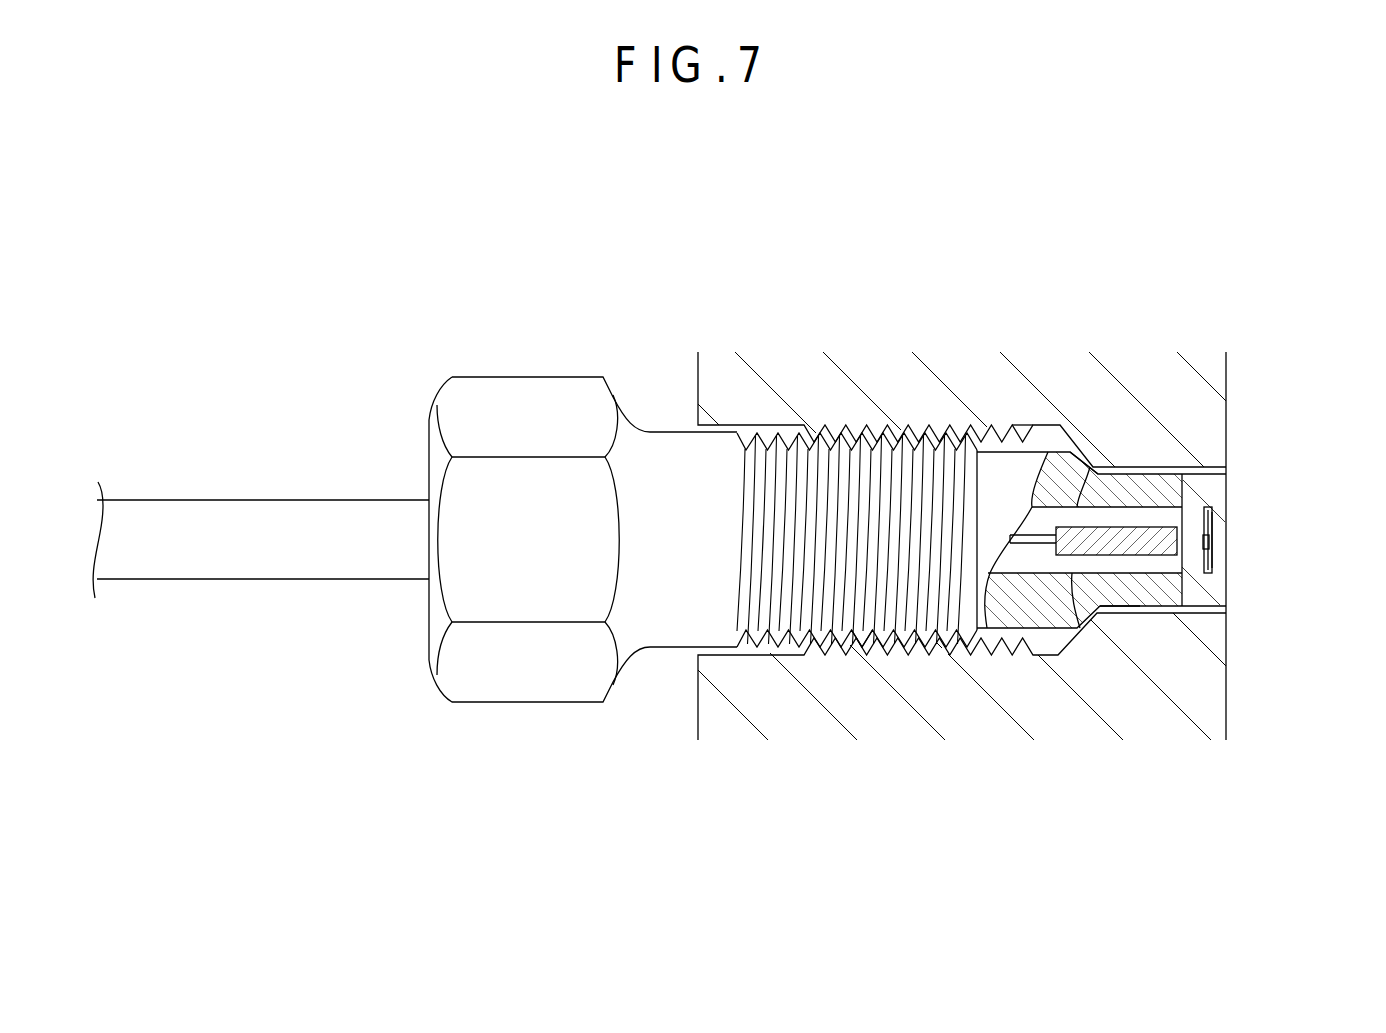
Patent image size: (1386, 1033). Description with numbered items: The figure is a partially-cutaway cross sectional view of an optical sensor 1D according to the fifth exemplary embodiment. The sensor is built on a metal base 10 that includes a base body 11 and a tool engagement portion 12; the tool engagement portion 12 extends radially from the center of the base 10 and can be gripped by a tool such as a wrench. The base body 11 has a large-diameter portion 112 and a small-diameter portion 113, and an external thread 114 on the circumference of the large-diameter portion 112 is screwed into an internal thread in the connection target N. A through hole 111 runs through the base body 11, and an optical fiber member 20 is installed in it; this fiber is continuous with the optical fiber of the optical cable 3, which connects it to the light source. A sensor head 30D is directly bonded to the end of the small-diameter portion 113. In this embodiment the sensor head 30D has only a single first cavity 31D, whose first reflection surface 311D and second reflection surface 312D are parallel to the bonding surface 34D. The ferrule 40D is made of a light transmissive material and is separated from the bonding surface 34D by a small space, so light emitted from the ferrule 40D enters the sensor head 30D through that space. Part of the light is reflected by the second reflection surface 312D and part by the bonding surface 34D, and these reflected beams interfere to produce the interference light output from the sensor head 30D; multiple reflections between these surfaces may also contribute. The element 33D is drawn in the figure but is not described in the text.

The optical sensor 1D is at (1103, 170).
The optical cable 3 is at (273, 500).
The tool engagement portion 12 is at (556, 377).
The base 10 is at (914, 427).
The base body 11 is at (824, 426).
The large-diameter portion 112 is at (1015, 427).
The through hole 111 is at (1092, 466).
The small-diameter portion 113 is at (1122, 607).
The external thread 114 is at (862, 652).
The optical fiber member 20 is at (1028, 548).
The ferrule 40D is at (1100, 607).
The bonding surface 34D is at (1183, 484).
The sensor head 30D is at (1229, 478).
The first cavity 31D is at (1214, 507).
The end face member 33D is at (1226, 528).
The first reflection surface 311D is at (1211, 547).
The second reflection surface 312D is at (1211, 568).
The connection target N is at (1200, 398).